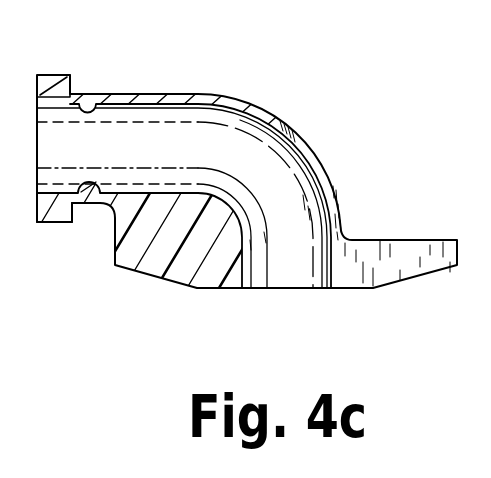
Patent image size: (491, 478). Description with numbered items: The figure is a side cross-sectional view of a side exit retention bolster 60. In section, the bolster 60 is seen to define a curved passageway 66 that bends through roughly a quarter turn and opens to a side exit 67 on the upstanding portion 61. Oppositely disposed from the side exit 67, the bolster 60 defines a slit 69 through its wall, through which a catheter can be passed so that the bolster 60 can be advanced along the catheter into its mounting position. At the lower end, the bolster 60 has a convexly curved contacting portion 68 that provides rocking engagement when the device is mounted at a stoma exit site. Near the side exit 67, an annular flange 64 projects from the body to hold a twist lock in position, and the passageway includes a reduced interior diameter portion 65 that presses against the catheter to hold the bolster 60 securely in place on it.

The side exit retention bolster 60 is at (275, 117).
The upstanding portion 61 is at (215, 100).
The annular flange 64 is at (55, 216).
The reduced interior diameter portion 65 is at (38, 108).
The curved passageway 66 is at (285, 268).
The side exit 67 is at (38, 178).
The convexly curved contacting portion 68 is at (330, 290).
The slit 69 is at (317, 167).